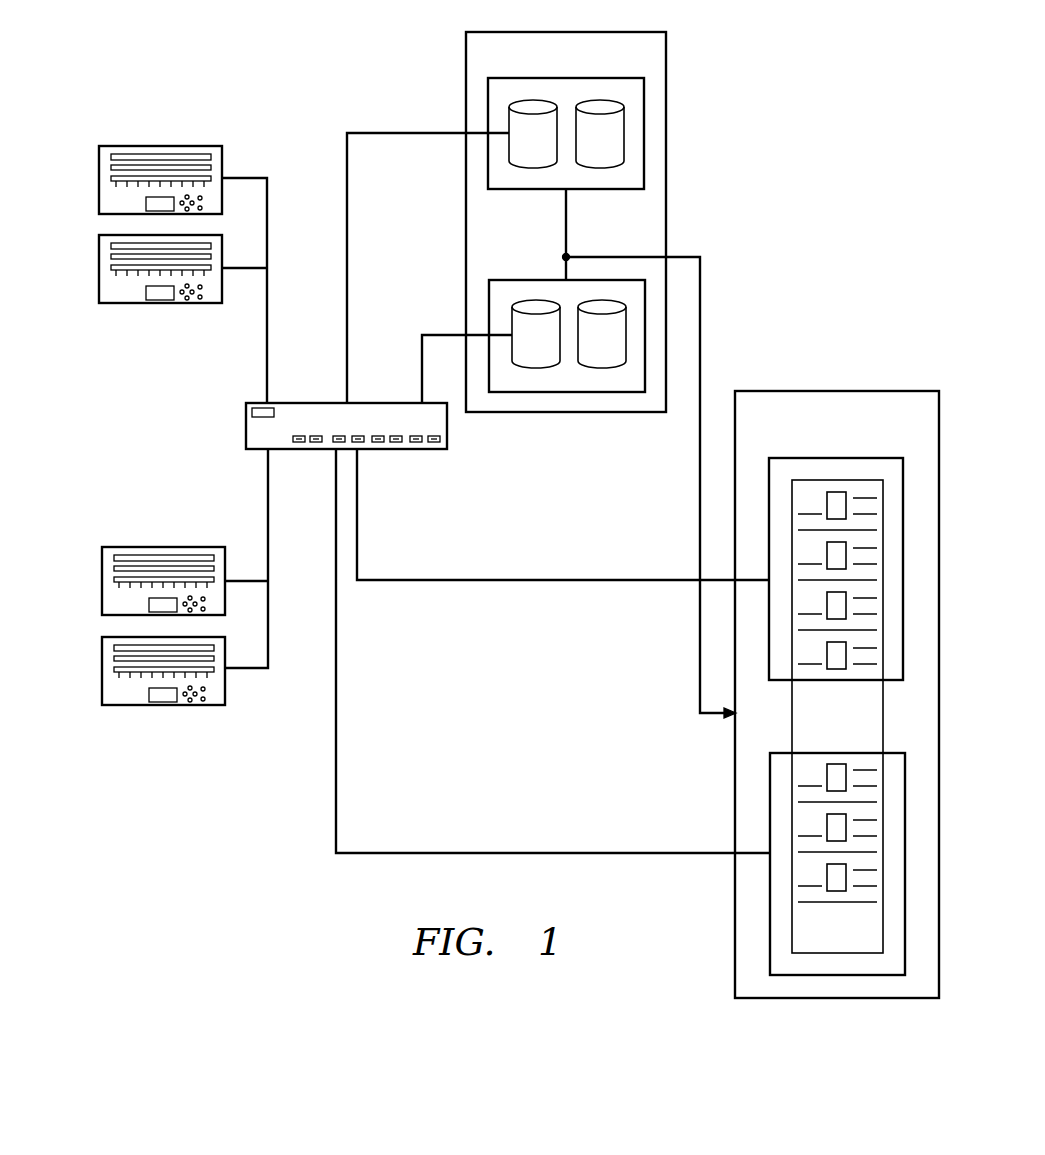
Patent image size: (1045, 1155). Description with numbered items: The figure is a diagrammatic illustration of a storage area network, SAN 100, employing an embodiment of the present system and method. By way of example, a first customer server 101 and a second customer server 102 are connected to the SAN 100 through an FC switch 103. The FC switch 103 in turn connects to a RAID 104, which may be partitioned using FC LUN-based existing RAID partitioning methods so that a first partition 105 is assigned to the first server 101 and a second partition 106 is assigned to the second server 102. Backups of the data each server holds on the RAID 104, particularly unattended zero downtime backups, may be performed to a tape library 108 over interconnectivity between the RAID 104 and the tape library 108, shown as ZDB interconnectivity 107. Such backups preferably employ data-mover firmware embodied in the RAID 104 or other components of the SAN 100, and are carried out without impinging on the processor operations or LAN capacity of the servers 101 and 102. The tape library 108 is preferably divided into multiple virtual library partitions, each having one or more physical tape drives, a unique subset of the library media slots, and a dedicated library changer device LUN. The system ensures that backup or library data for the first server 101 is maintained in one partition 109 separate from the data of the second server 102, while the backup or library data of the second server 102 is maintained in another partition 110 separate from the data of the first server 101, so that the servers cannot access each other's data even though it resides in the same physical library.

The SAN 100 is at (286, 70).
The first customer server 101 is at (90, 147).
The second customer server 102 is at (94, 549).
The FC switch 103 is at (423, 450).
The RAID 104 is at (666, 152).
The first partition 105 is at (597, 190).
The second partition 106 is at (533, 278).
The ZDB interconnectivity 107 is at (700, 657).
The tape library 108 is at (835, 390).
The partition 109 is at (780, 752).
The partition 110 is at (893, 683).